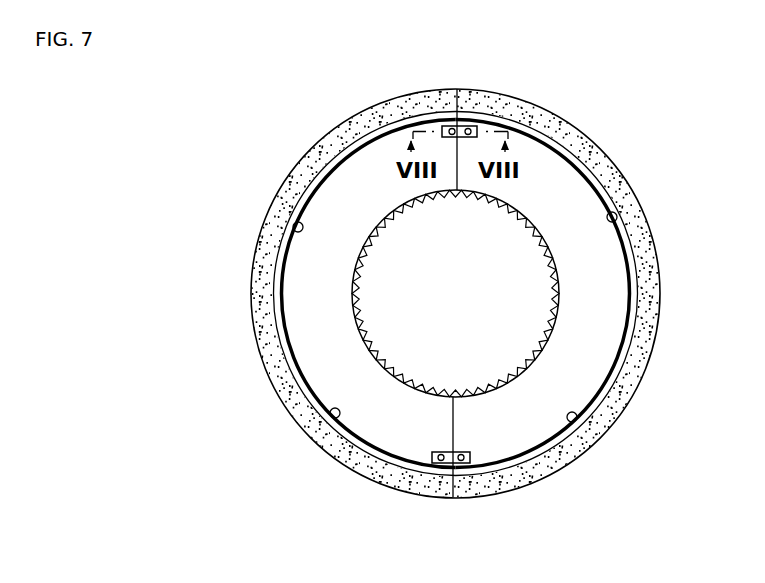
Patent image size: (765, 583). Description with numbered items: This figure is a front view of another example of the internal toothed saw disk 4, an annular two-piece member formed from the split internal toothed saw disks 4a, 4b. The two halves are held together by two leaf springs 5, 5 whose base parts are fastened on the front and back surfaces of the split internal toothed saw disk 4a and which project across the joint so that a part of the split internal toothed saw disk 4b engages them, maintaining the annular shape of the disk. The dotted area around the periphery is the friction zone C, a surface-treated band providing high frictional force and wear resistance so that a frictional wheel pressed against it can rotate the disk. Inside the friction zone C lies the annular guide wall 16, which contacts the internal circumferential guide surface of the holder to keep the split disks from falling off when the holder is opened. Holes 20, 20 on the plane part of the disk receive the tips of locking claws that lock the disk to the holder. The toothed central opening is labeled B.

The internal toothed saw disk 4 is at (392, 98).
The split internal toothed saw disk 4a is at (347, 183).
The split internal toothed saw disk 4b is at (573, 173).
The leaf spring 5 is at (462, 128).
The annular guide wall 16 is at (292, 229).
The hole 20 is at (332, 423).
The toothed core B is at (360, 323).
The friction zone C is at (645, 342).